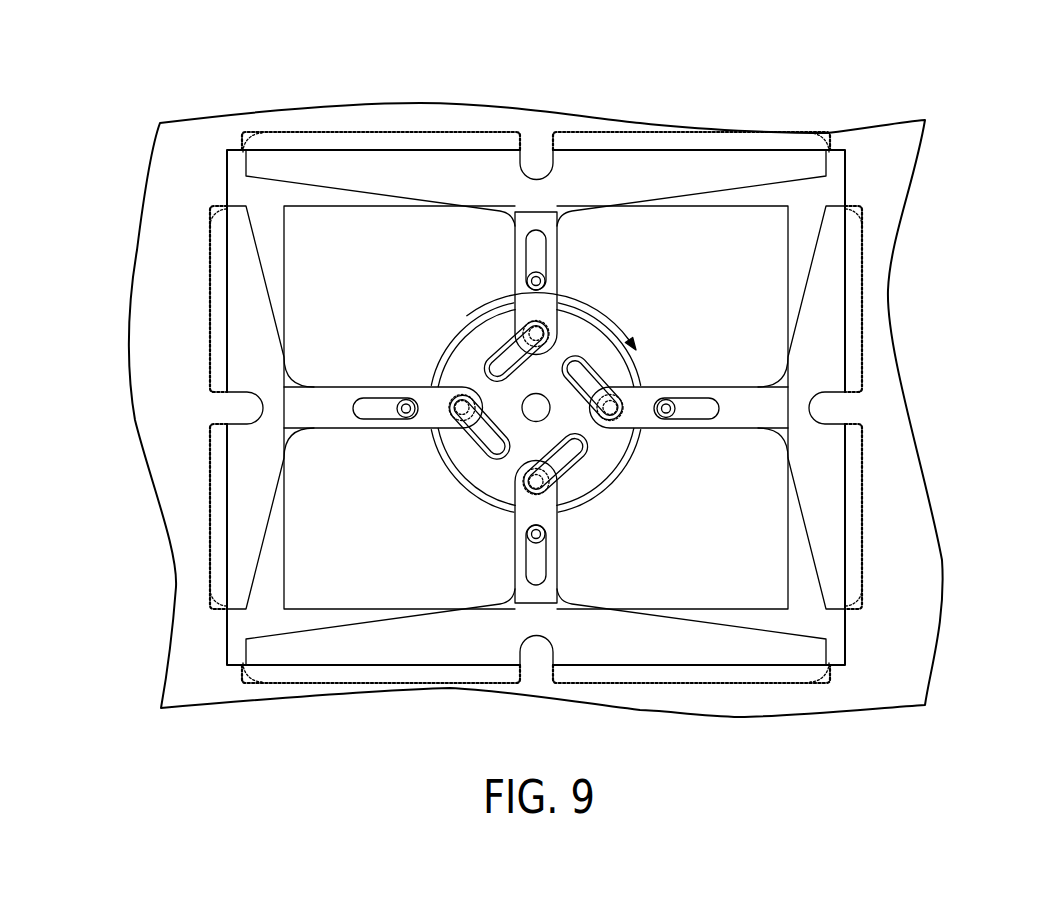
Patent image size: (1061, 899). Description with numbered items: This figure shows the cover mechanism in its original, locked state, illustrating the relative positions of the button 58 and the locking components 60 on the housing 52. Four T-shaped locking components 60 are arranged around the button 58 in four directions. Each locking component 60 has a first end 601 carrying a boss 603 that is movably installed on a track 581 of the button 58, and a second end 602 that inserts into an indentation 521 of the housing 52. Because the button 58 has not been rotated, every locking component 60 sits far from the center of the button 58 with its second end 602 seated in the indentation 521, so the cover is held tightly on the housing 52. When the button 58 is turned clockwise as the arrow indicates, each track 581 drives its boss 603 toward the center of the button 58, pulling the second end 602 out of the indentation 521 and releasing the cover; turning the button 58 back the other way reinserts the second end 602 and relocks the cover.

The housing 52 is at (195, 158).
The indentation 521 is at (832, 126).
The button 58 is at (634, 372).
The track 581 is at (493, 352).
The locking component 60 is at (635, 407).
The first end 601 is at (612, 404).
The second end 602 is at (822, 378).
The boss 603 is at (599, 398).